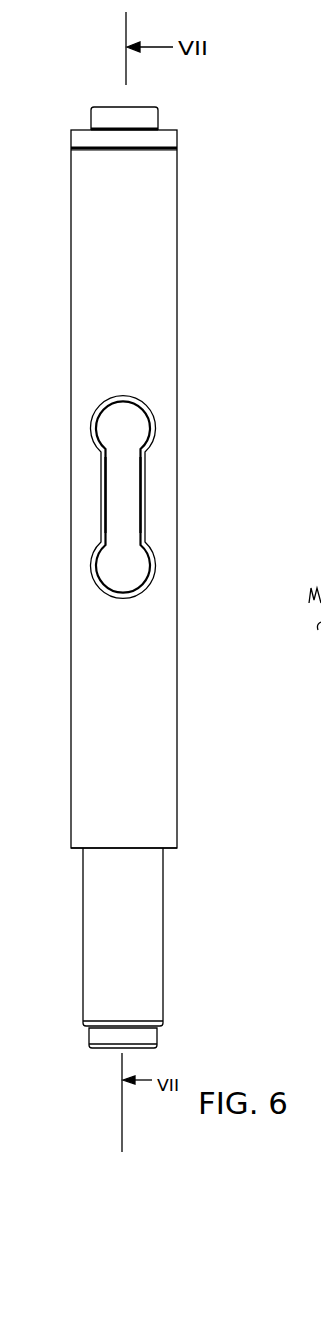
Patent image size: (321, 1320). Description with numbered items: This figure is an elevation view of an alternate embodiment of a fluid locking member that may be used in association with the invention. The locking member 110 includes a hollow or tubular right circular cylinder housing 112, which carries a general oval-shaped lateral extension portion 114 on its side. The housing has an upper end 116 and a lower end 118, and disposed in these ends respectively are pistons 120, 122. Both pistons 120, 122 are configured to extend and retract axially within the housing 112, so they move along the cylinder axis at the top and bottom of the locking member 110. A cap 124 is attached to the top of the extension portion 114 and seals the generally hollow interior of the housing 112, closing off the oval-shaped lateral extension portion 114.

The locking member 110 is at (188, 562).
The housing 112 is at (156, 320).
The lateral extension portion 114 is at (162, 431).
The upper end of the housing 116 is at (177, 152).
The lower end of the housing 118 is at (170, 848).
The piston 120 is at (172, 123).
The piston 122 is at (172, 929).
The cap 124 is at (192, 495).